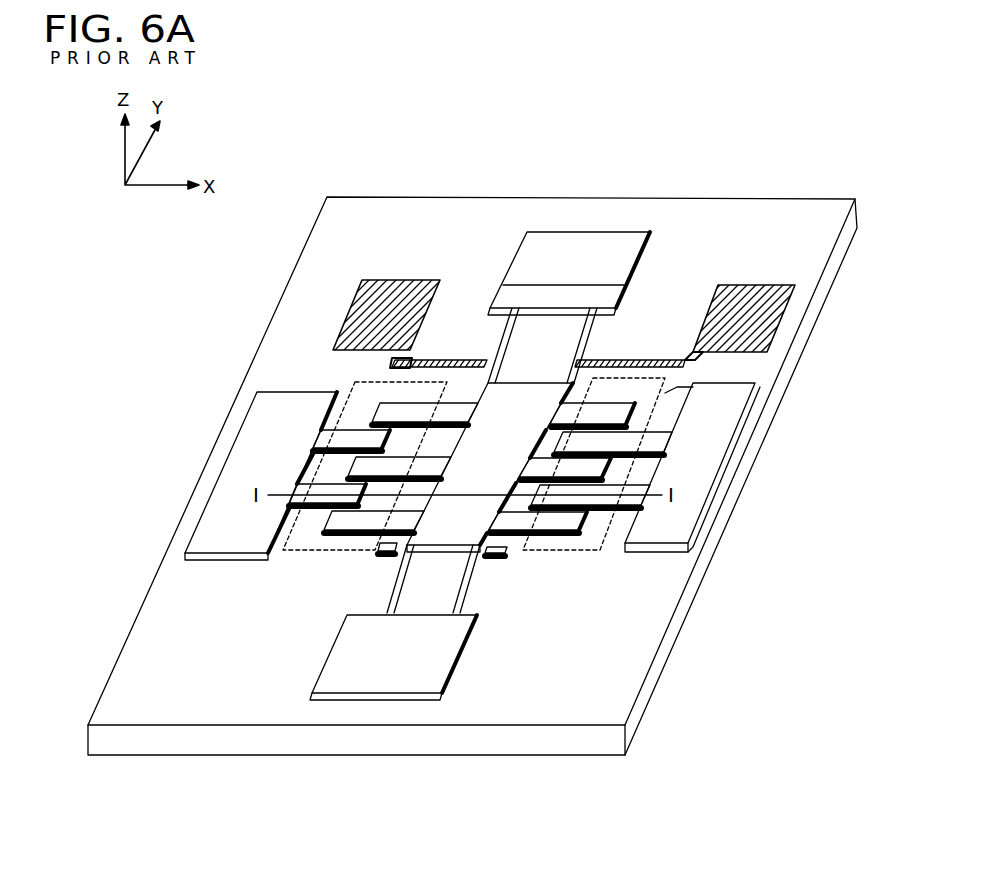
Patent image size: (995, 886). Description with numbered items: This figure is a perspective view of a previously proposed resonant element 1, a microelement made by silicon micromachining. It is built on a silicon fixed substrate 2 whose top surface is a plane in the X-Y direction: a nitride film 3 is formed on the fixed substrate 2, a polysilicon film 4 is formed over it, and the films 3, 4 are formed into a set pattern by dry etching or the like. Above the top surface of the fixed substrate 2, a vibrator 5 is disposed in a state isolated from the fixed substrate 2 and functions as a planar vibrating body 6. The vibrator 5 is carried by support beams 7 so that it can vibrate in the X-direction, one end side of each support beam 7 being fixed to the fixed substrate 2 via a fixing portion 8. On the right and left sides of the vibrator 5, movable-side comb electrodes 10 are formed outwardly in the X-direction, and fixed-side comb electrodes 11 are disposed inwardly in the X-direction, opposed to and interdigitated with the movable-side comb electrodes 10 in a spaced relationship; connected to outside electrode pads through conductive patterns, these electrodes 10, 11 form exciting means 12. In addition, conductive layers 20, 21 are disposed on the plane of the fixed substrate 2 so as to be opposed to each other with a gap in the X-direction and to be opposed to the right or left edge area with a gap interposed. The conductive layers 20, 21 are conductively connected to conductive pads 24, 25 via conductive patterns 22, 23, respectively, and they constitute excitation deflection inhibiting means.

The resonant element 1 is at (590, 168).
The fixed substrate 2 is at (755, 212).
The nitride film 3 is at (652, 247).
The polysilicon film 4 is at (527, 243).
The vibrator 5 is at (493, 447).
The planar vibrating body 6 is at (505, 428).
The support beams 7 is at (498, 327).
The fixing portion 8 is at (603, 233).
The movable-side comb electrodes 10 is at (407, 410).
The fixed-side comb electrodes 11 is at (785, 408).
The exciting means 12 is at (283, 550).
The conductive layer 20 is at (375, 560).
The conductive layer 21 is at (510, 553).
The conductive pattern 22 is at (422, 358).
The conductive pattern 23 is at (677, 341).
The conductive pad 24 is at (403, 268).
The conductive pad 25 is at (743, 285).